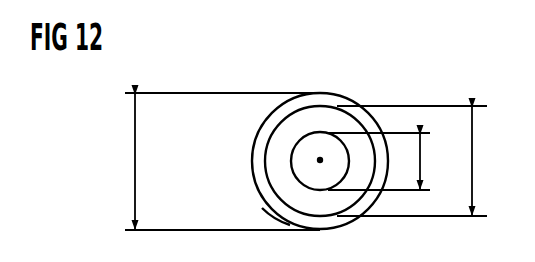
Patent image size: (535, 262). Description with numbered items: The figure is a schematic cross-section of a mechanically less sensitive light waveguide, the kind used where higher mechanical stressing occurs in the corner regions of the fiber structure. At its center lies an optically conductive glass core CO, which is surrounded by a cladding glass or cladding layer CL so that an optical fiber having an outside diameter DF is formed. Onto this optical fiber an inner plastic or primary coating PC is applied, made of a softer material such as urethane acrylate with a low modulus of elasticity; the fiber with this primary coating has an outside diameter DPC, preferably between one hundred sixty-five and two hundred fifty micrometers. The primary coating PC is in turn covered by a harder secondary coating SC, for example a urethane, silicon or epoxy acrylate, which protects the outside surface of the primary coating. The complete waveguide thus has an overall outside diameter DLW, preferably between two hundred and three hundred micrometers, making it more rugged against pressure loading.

The secondary coating SC is at (272, 112).
The primary coating PC is at (282, 141).
The cladding layer CL is at (259, 148).
The glass core CO is at (261, 175).
The overall outside diameter DLW is at (211, 161).
The outside diameter of the optical fiber DF is at (379, 161).
The outside diameter of the primary coating DPC is at (412, 161).